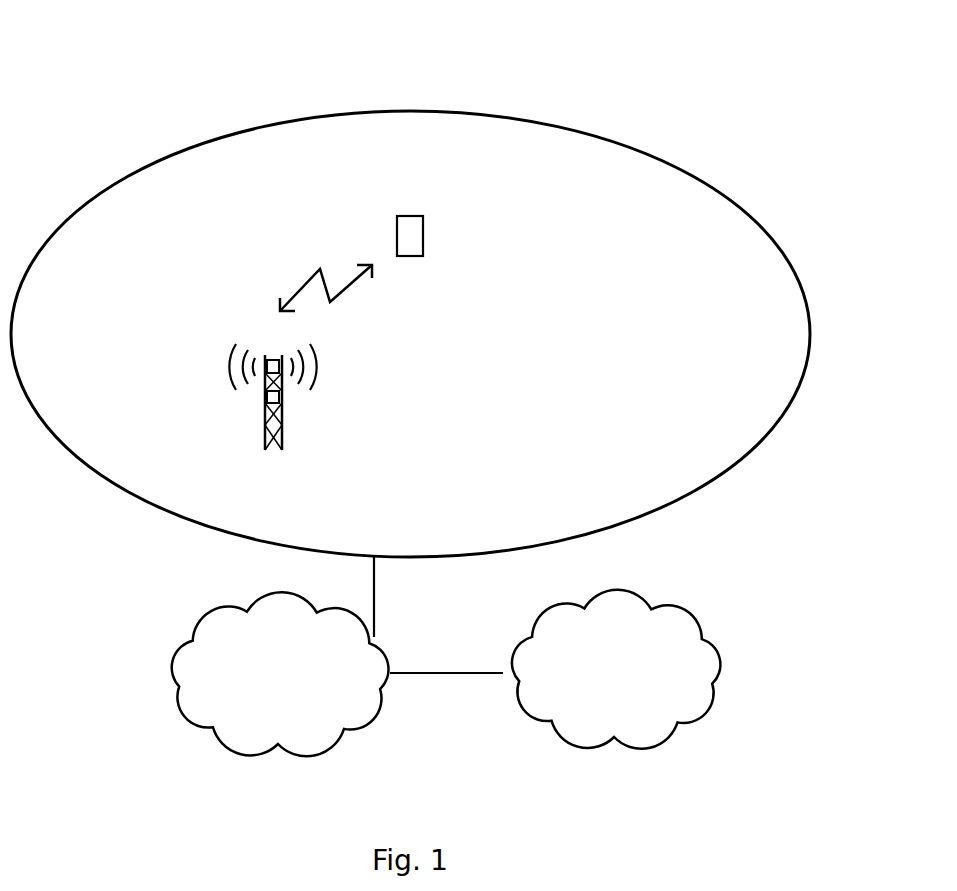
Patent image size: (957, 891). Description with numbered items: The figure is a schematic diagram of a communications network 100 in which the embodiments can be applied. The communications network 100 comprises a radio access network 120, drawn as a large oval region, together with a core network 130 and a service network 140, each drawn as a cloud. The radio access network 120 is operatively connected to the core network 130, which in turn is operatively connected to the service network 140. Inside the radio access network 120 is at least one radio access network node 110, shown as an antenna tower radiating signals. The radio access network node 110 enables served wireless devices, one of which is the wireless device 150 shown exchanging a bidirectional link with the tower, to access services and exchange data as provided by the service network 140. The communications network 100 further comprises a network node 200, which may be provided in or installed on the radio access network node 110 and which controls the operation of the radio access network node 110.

The communications network 100 is at (735, 67).
The radio access network node 110 is at (265, 443).
The radio access network 120 is at (167, 513).
The core network 130 is at (282, 646).
The service network 140 is at (630, 642).
The wireless device 150 is at (423, 236).
The network node 200 is at (281, 393).